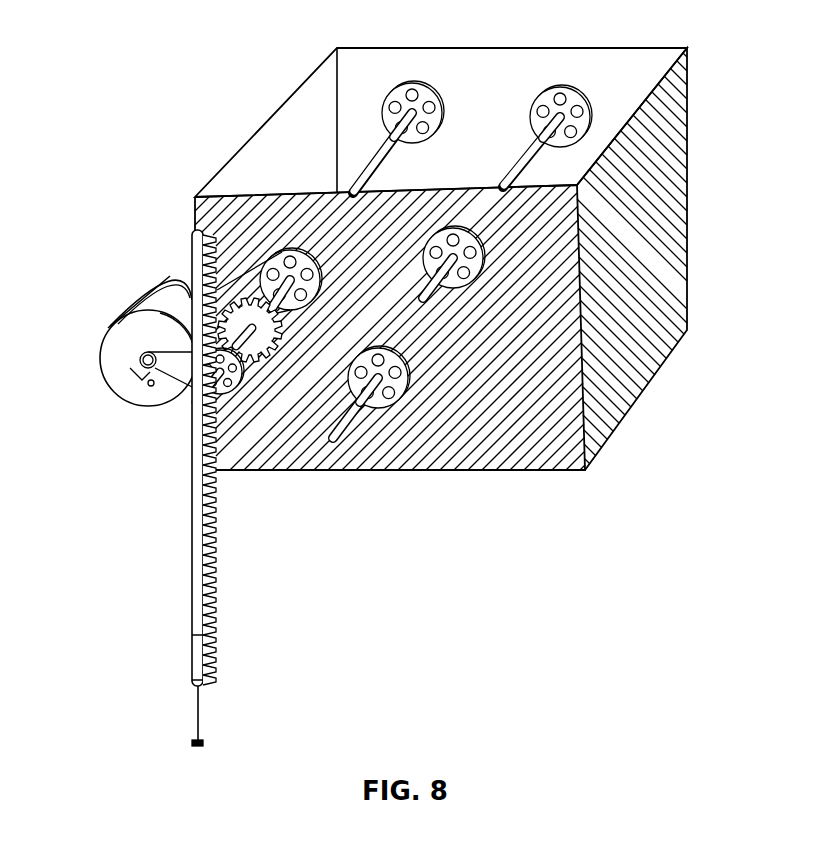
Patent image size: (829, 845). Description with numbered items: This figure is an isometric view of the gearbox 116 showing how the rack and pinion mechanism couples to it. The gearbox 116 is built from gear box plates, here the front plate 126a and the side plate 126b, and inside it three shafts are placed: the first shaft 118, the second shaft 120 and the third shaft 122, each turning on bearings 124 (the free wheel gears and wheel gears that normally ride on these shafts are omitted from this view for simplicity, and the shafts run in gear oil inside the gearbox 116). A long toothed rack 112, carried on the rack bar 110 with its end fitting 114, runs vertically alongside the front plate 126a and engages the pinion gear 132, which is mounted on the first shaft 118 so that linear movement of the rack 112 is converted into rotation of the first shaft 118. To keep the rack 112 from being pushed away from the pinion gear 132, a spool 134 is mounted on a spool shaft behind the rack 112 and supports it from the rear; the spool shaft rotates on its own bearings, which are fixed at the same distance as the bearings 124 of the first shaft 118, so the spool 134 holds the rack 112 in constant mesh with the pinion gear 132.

The rack bar 110 is at (196, 566).
The rack 112 is at (217, 563).
The rod / foot 114 is at (197, 728).
The gearbox 116 is at (194, 82).
The first shaft 118 is at (381, 151).
The second shaft 120 is at (343, 444).
The third shaft 122 is at (521, 161).
The bearings 124 is at (560, 94).
The gear box plate 126a is at (205, 215).
The gear box plate 126b is at (675, 90).
The pinion gear 132 is at (290, 347).
The spool 134 is at (110, 357).